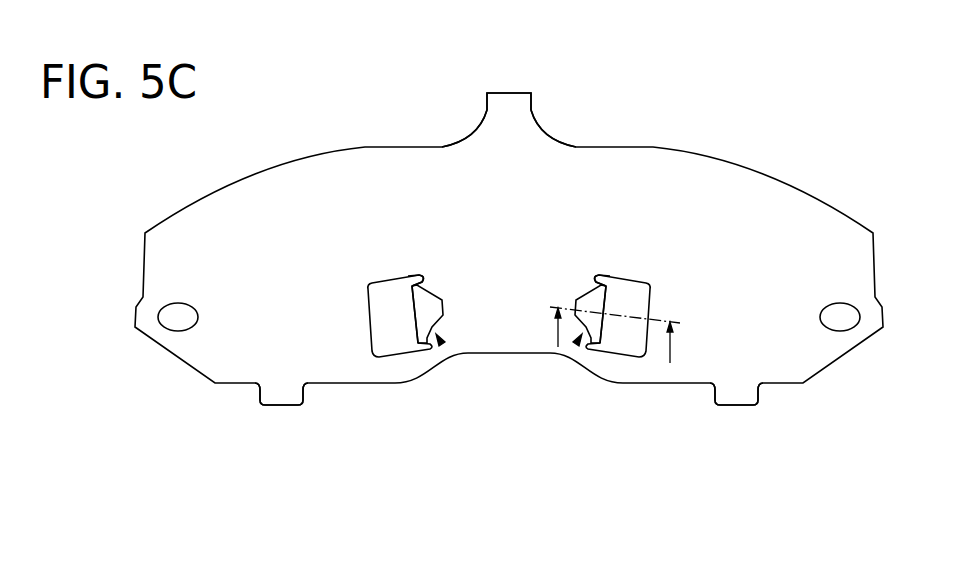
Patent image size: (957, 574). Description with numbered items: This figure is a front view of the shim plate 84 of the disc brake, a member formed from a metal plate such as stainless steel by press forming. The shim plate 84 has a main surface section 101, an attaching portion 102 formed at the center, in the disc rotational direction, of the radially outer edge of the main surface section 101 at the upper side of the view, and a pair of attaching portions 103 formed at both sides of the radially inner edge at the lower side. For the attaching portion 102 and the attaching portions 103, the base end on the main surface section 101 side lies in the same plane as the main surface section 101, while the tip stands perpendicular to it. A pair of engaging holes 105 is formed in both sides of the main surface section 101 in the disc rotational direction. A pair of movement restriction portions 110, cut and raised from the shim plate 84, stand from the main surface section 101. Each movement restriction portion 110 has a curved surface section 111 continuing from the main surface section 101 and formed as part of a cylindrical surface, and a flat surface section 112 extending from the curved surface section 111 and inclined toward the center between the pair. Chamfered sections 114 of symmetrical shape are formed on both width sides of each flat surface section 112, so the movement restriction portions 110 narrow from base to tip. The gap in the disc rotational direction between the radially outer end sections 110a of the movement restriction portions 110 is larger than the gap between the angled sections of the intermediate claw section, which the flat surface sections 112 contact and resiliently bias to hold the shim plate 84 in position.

The shim plate 84 is at (527, 248).
The main surface section 101 is at (663, 180).
The attaching portion 102 is at (512, 92).
The attaching portions 103 is at (283, 405).
The engaging holes 105 is at (162, 317).
The movement restriction portions 110 is at (446, 326).
The end sections 110a is at (418, 276).
The curved surface section 111 is at (417, 323).
The flat surface section 112 is at (420, 306).
The chamfered sections 114 is at (417, 285).